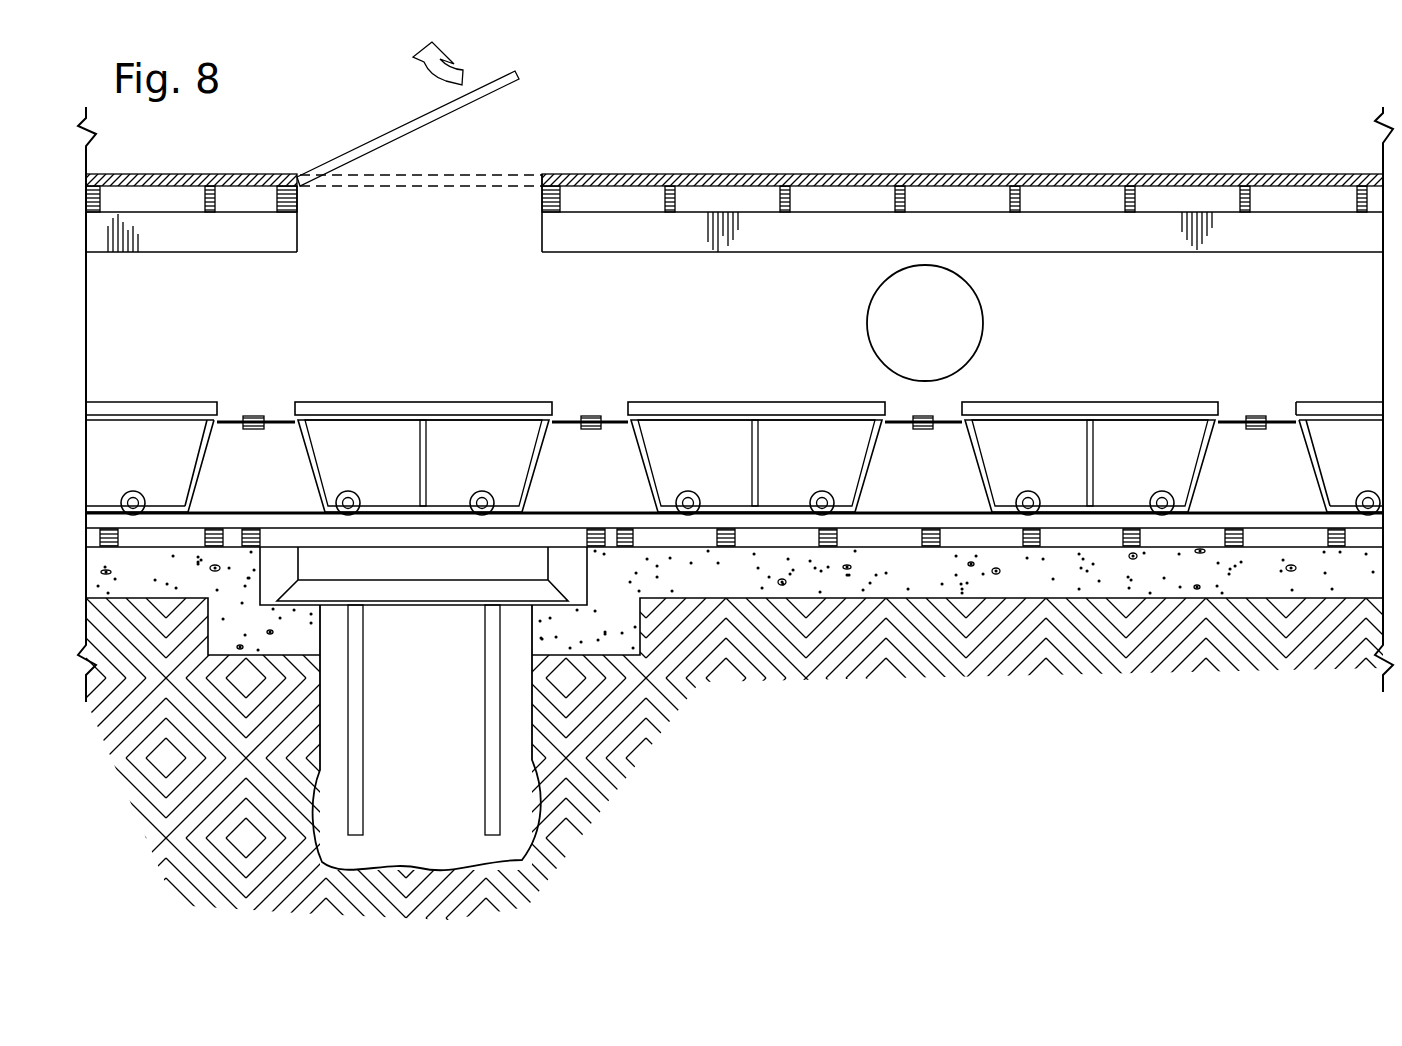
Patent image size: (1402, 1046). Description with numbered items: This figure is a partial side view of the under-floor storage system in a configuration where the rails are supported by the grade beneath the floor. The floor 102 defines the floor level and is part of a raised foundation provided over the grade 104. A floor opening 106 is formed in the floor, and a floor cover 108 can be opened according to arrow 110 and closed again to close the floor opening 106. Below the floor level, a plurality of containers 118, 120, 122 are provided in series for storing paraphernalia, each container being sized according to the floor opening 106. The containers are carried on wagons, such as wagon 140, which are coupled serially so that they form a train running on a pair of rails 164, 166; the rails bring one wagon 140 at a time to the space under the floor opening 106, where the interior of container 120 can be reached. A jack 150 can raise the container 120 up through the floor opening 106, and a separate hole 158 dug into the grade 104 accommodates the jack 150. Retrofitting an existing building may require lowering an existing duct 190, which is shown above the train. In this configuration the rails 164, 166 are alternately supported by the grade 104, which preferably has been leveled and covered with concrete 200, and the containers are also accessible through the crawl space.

The floor 102 is at (977, 170).
The grade 104 is at (860, 650).
The floor opening 106 is at (468, 192).
The floor cover 108 is at (512, 84).
The arrow 110 is at (440, 80).
The container 118 is at (693, 440).
The container 120 is at (397, 410).
The container 122 is at (133, 440).
The wagon 140 is at (302, 455).
The jack 150 is at (436, 610).
The hole 158 is at (423, 783).
The rail 164 is at (880, 512).
The rail 166 is at (963, 505).
The duct 190 is at (975, 353).
The concrete 200 is at (1300, 545).